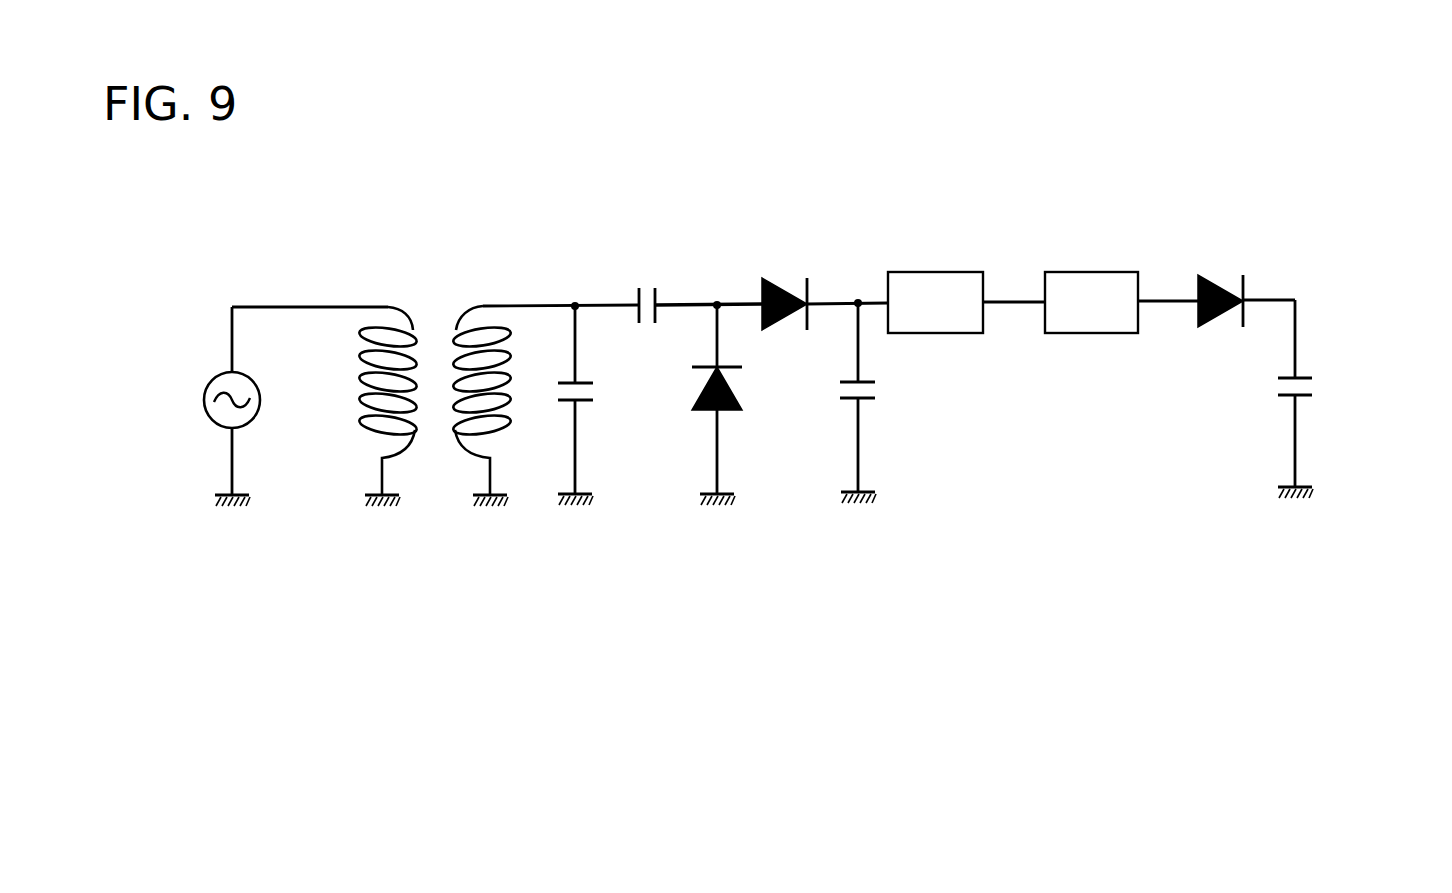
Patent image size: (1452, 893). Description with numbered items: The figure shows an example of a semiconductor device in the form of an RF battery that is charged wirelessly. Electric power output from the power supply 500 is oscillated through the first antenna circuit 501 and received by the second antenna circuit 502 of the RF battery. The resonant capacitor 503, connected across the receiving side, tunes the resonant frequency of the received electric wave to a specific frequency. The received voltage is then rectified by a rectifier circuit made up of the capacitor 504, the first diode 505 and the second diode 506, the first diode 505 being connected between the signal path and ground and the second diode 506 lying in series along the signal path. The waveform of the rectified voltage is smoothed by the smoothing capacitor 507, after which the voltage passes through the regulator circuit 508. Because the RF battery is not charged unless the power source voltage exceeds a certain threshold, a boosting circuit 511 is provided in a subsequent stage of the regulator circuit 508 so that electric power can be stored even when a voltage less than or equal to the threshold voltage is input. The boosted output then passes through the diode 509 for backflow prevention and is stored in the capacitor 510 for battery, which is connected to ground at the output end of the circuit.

The power supply 500 is at (205, 397).
The first antenna circuit 501 is at (388, 305).
The second antenna circuit 502 is at (483, 305).
The resonant capacitor 503 is at (594, 400).
The capacitor of a rectifier circuit 504 is at (652, 287).
The first diode 505 is at (742, 410).
The second diode 506 is at (787, 285).
The smoothing capacitor 507 is at (874, 390).
The regulator circuit 508 is at (930, 288).
The diode for backflow prevention 509 is at (1220, 282).
The capacitor for battery 510 is at (1312, 388).
The boosting circuit 511 is at (1088, 288).